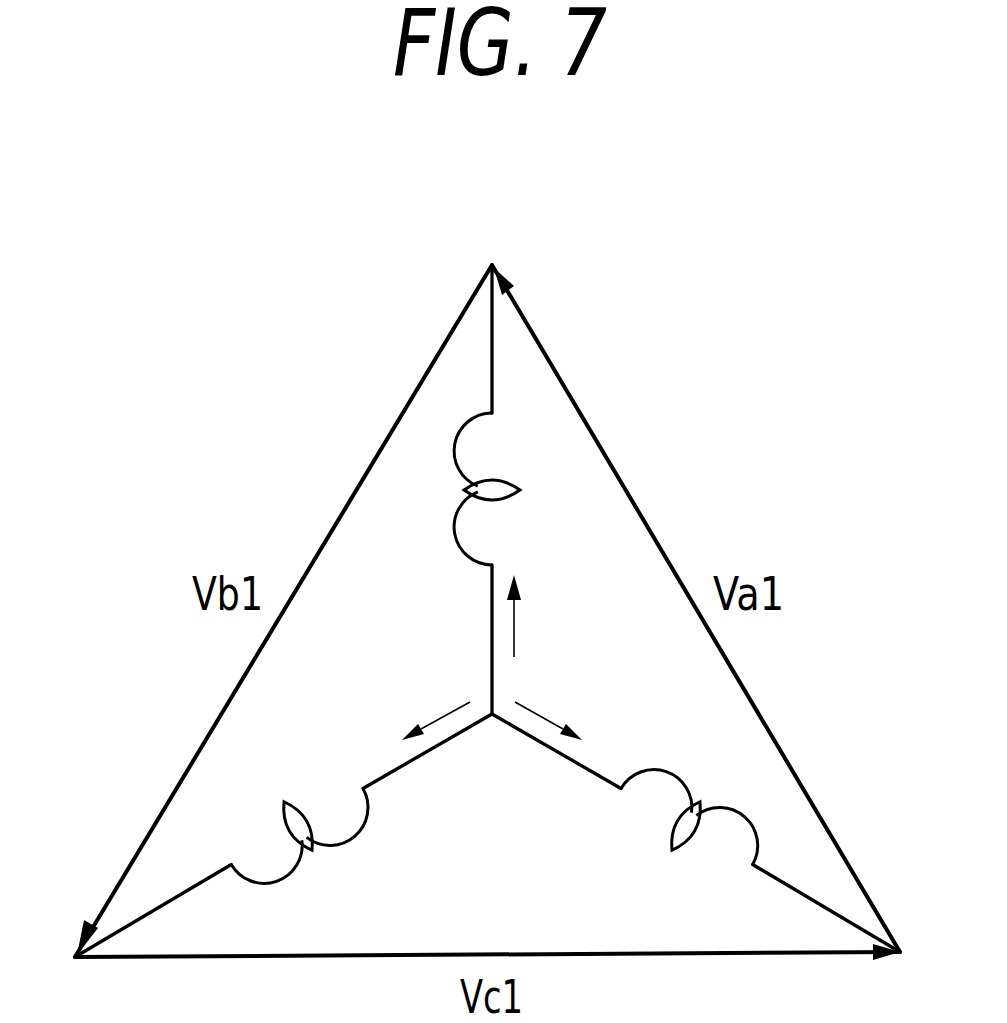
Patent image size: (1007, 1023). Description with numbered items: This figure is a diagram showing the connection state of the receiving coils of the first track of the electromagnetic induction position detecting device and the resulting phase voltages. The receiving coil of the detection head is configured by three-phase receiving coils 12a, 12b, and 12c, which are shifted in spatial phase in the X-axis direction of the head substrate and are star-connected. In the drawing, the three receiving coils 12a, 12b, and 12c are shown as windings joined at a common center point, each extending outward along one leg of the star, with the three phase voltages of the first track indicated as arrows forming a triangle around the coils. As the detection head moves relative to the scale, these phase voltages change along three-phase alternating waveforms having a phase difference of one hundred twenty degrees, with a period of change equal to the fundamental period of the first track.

The receiving coil 12a is at (500, 473).
The receiving coil 12b is at (272, 793).
The receiving coil 12c is at (712, 792).